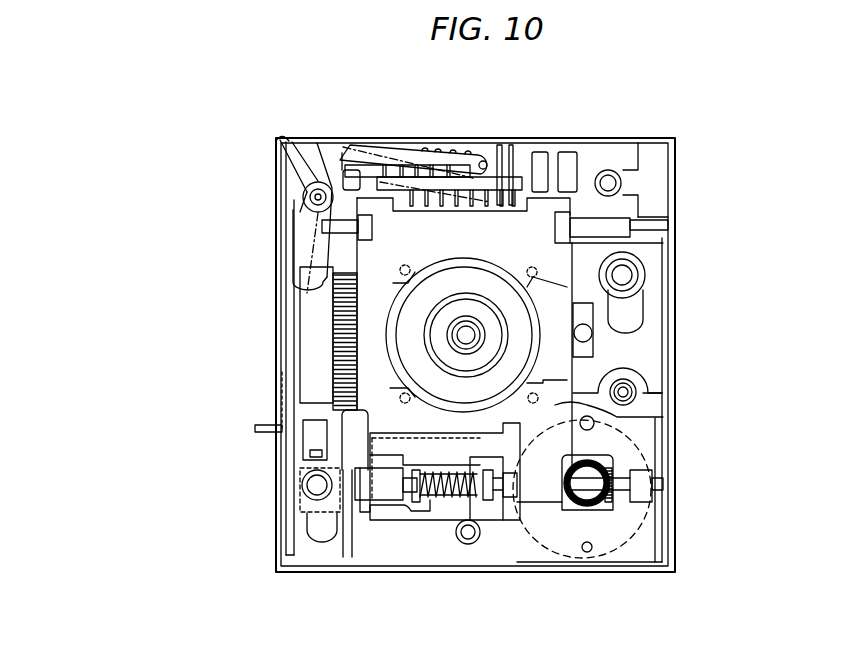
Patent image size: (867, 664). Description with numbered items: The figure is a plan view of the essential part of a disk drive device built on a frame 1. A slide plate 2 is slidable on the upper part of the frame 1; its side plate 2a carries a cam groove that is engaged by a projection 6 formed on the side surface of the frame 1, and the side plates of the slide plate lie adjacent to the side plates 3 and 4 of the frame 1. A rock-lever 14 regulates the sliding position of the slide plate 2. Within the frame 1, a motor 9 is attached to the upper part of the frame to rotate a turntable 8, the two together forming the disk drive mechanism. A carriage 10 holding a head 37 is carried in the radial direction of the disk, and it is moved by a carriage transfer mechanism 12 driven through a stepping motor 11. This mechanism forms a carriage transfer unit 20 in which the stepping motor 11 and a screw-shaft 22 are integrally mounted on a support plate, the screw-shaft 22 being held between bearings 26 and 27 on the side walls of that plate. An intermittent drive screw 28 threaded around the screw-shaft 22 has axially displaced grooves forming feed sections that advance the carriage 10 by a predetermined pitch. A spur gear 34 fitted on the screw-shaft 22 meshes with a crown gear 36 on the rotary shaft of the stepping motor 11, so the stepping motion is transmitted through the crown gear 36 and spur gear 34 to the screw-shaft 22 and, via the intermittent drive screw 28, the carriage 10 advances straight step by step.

The frame 1 is at (677, 152).
The slide plate 2 is at (293, 550).
The side plate 2a is at (290, 318).
The side plate 3 is at (282, 458).
The side plate 4 is at (676, 216).
The projection 6 is at (665, 258).
The turntable 8 is at (491, 352).
The motor 9 is at (523, 343).
The carriage 10 is at (555, 404).
The stepping motor 11 is at (655, 548).
The carriage transfer mechanism 12 is at (415, 518).
The rock-lever 14 is at (405, 160).
The carriage transfer unit 20 is at (505, 530).
The screw-shaft 22 is at (575, 500).
The bearing 26 is at (385, 498).
The bearing 27 is at (640, 474).
The intermittent drive screw 28 is at (430, 500).
The spur gear 34 is at (617, 500).
The crown gear 36 is at (605, 505).
The head 37 is at (593, 315).